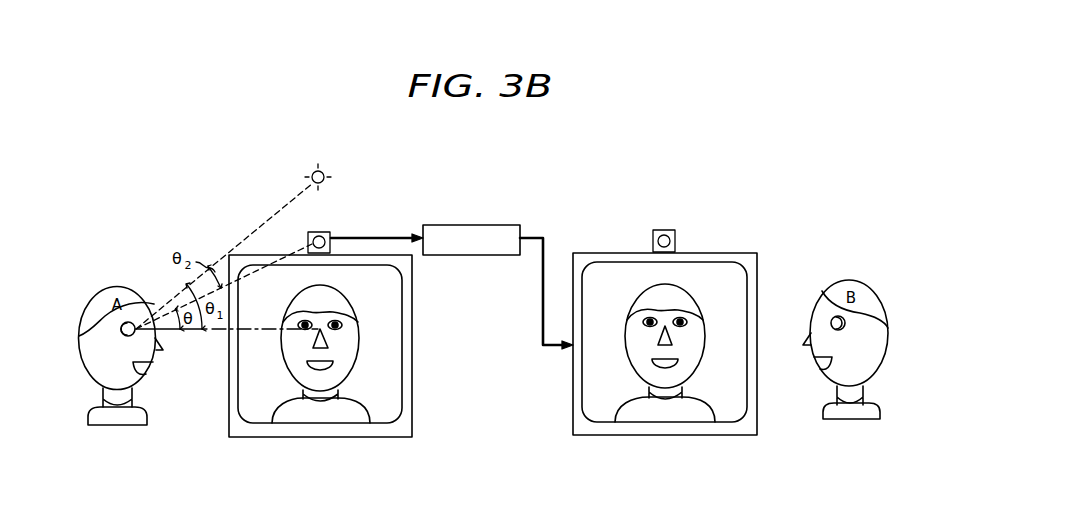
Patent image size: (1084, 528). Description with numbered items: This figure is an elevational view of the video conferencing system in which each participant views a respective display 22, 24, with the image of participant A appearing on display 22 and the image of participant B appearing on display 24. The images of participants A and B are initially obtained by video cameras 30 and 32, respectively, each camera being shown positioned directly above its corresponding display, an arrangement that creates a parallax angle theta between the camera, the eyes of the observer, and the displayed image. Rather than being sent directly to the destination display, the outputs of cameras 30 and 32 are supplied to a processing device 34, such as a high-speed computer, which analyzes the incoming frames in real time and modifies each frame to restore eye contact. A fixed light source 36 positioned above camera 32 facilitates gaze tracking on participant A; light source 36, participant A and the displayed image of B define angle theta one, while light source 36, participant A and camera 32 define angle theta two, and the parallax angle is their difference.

The display 22 is at (760, 275).
The display 24 is at (414, 414).
The video camera 30 is at (677, 241).
The video camera 32 is at (328, 232).
The processing device 34 is at (466, 223).
The fixed light source 36 is at (314, 172).